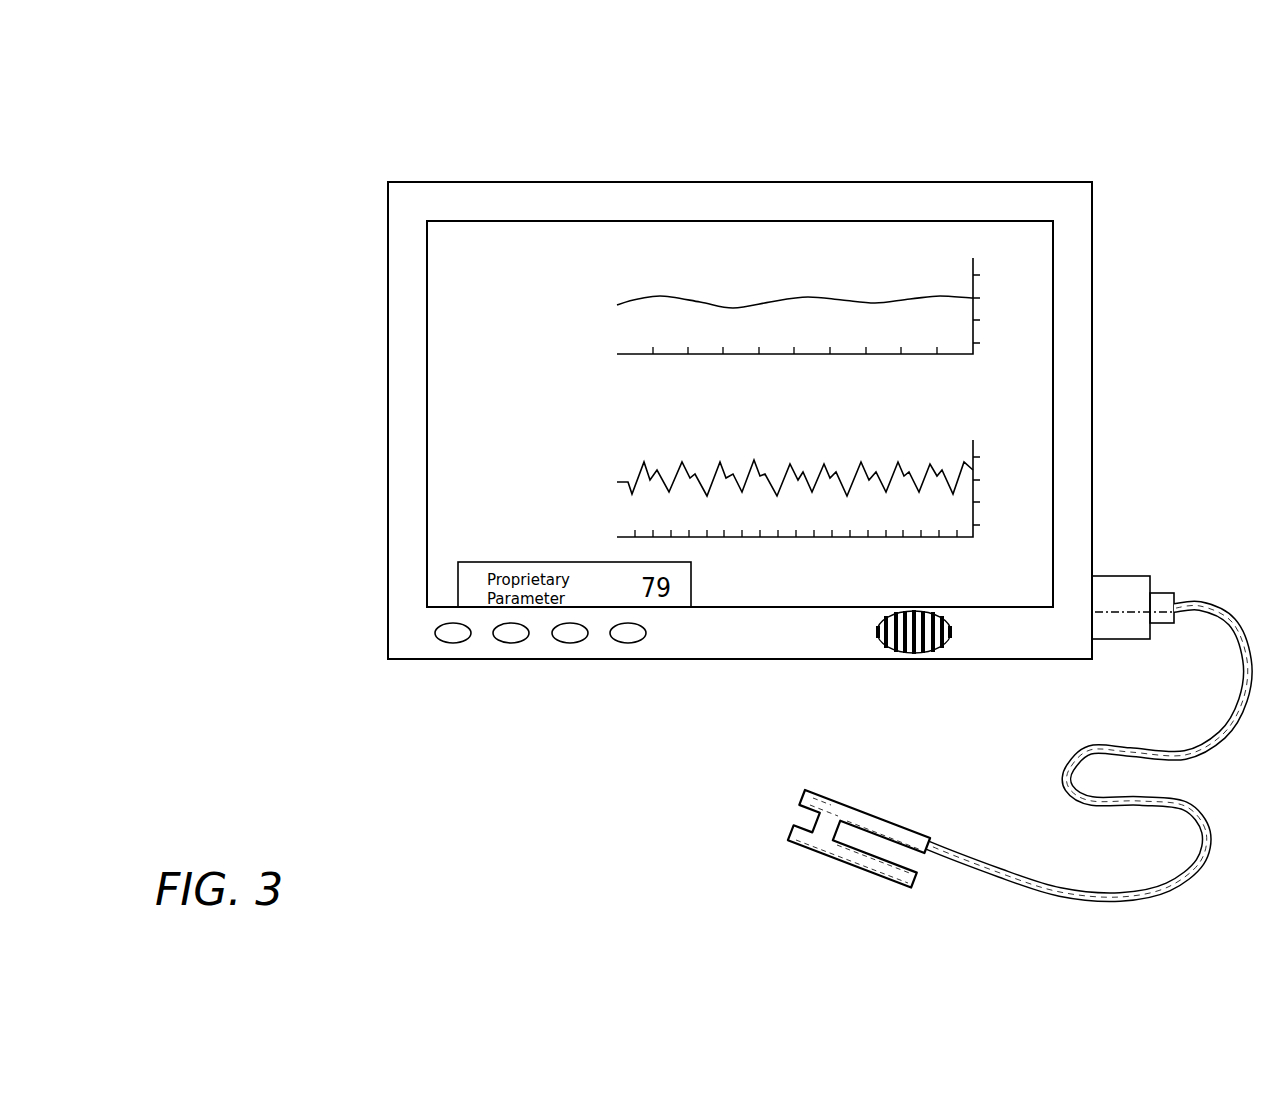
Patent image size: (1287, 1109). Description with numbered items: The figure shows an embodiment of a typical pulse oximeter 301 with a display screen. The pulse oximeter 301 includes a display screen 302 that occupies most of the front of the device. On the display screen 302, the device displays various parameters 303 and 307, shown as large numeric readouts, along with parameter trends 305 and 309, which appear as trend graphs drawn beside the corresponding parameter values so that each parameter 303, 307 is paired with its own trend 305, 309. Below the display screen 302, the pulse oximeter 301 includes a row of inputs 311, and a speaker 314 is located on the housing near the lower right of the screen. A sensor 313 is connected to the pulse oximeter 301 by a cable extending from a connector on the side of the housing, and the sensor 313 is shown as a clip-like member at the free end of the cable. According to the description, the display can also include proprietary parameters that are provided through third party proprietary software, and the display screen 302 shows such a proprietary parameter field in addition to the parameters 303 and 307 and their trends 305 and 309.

The pulse oximeter 301 is at (1080, 138).
The display screen 302 is at (612, 262).
The parameter 303 is at (457, 287).
The parameter trend 305 is at (1027, 304).
The parameter 307 is at (457, 468).
The parameter trend 309 is at (1027, 487).
The inputs 311 is at (647, 672).
The sensor 313 is at (881, 790).
The speaker 314 is at (950, 637).